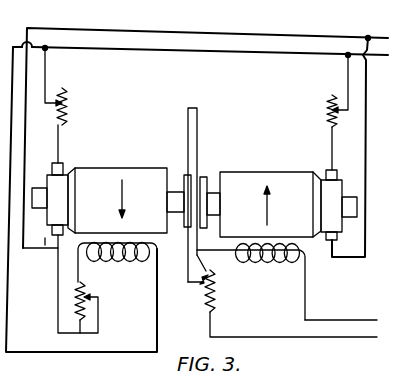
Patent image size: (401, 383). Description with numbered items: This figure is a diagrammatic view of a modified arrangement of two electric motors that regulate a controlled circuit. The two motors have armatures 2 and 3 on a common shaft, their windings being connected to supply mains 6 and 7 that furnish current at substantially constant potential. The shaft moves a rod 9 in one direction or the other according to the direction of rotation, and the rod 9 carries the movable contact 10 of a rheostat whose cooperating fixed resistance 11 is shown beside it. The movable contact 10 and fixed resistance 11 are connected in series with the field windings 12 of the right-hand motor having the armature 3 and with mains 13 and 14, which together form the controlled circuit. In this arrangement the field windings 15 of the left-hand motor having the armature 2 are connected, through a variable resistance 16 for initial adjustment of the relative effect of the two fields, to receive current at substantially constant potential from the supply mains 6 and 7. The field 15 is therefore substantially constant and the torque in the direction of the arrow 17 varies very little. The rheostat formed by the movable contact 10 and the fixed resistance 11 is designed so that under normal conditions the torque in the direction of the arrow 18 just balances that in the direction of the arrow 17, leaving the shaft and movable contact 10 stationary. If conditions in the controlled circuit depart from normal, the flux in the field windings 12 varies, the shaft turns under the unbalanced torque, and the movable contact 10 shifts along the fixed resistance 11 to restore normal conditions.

The armature 2 is at (87, 175).
The armature 3 is at (242, 177).
The main 6 is at (384, 33).
The main 7 is at (380, 58).
The rod 9 is at (193, 152).
The movable contact 10 is at (200, 290).
The fixed resistance 11 is at (219, 308).
The field windings 12 is at (278, 263).
The main 13 is at (347, 320).
The main 14 is at (338, 345).
The field windings 15 is at (122, 265).
The variable resistance 16 is at (137, 279).
The arrow 17 is at (115, 197).
The arrow 18 is at (262, 208).